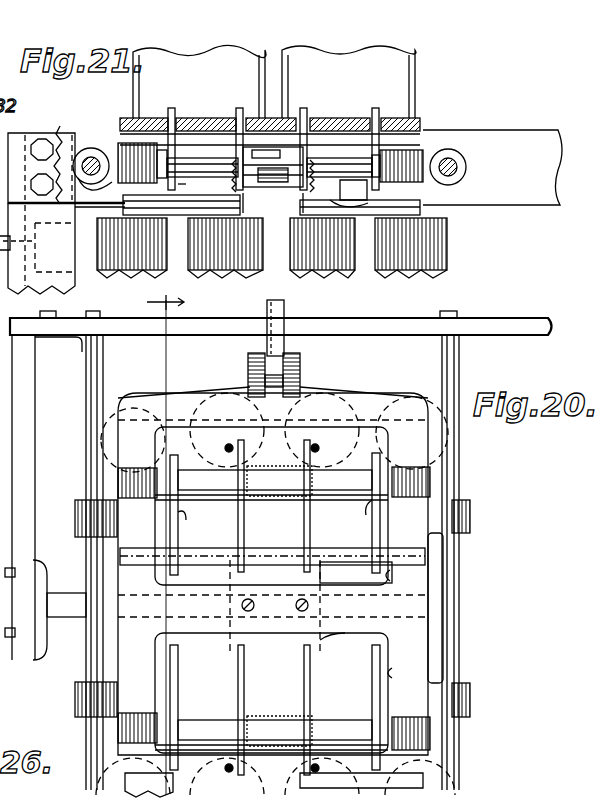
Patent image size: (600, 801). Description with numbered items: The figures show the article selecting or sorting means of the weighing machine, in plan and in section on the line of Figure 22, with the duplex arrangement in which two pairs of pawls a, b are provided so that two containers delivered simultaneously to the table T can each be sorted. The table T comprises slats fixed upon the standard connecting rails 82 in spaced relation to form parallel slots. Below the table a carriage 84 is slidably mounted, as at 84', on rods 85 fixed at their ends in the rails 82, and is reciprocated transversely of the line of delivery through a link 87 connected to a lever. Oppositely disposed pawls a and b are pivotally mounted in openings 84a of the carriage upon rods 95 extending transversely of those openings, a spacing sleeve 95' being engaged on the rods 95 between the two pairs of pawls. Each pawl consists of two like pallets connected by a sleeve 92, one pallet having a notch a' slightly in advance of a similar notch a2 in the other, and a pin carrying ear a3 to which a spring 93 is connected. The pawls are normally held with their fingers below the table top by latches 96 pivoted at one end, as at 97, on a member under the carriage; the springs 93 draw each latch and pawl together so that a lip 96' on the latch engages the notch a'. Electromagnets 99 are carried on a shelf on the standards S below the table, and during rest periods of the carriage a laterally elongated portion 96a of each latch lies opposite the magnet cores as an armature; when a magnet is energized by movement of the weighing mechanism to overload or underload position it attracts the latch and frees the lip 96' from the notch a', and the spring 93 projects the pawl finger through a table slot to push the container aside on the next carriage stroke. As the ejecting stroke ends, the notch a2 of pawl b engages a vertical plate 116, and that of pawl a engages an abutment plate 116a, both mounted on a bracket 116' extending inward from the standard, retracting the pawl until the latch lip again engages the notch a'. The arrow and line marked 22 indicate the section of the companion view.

In FIG. 21, the standard connecting rails 82 is at (82, 130).
In FIG. 20, the standard connecting rails 82 is at (351, 325).
In FIG. 21, the carriage 84 is at (284, 138).
In FIG. 20, the carriage 84 is at (249, 608).
In FIG. 21, the slidable mounting 84' is at (254, 148).
In FIG. 20, the slidable mounting 84' is at (272, 608).
In FIG. 20, the carriage openings 84a is at (404, 624).
In FIG. 21, the rods 85 is at (90, 176).
In FIG. 20, the rods 85 is at (85, 376).
In FIG. 21, the link 87 is at (303, 110).
In FIG. 20, the link 87 is at (284, 316).
In FIG. 21, the sleeve 92 is at (193, 158).
In FIG. 20, the sleeve 92 is at (271, 610).
In FIG. 20, the spring 93 is at (228, 449).
In FIG. 21, the rods 95 is at (286, 142).
In FIG. 20, the rods 95 is at (269, 606).
In FIG. 21, the spacing sleeve 95' is at (248, 111).
In FIG. 20, the spacing sleeve 95' is at (300, 599).
In FIG. 20, the latches 96 is at (273, 581).
In FIG. 21, the lip 96' is at (322, 191).
In FIG. 20, the lip 96' is at (276, 610).
In FIG. 21, the laterally elongated portion 96a is at (157, 208).
In FIG. 20, the laterally elongated portion 96a is at (116, 413).
In FIG. 20, the latch pivot 97 is at (350, 562).
In FIG. 21, the electromagnets 99 is at (150, 257).
In FIG. 20, the electromagnets 99 is at (223, 395).
In FIG. 21, the vertical plate 116 is at (264, 252).
In FIG. 20, the vertical plate 116 is at (273, 607).
In FIG. 21, the bracket 116' is at (82, 261).
In FIG. 20, the bracket 116' is at (139, 621).
In FIG. 20, the abutment plate 116a is at (282, 557).
In FIG. 21, the Figure 22 section line 22 is at (165, 295).
In FIG. 20, the Figure 22 section line 22 is at (274, 785).
In FIG. 21, the block L is at (274, 81).
In FIG. 21, the table T is at (328, 120).
In FIG. 21, the standards S is at (37, 248).
In FIG. 20, the standards S is at (25, 484).
In FIG. 20, the pawl a is at (272, 540).
In FIG. 21, the notch a' is at (260, 196).
In FIG. 21, the notch a2 is at (273, 180).
In FIG. 20, the pin carrying ear a3 is at (222, 657).
In FIG. 21, the pawl b is at (182, 120).
In FIG. 20, the pawl b is at (300, 687).